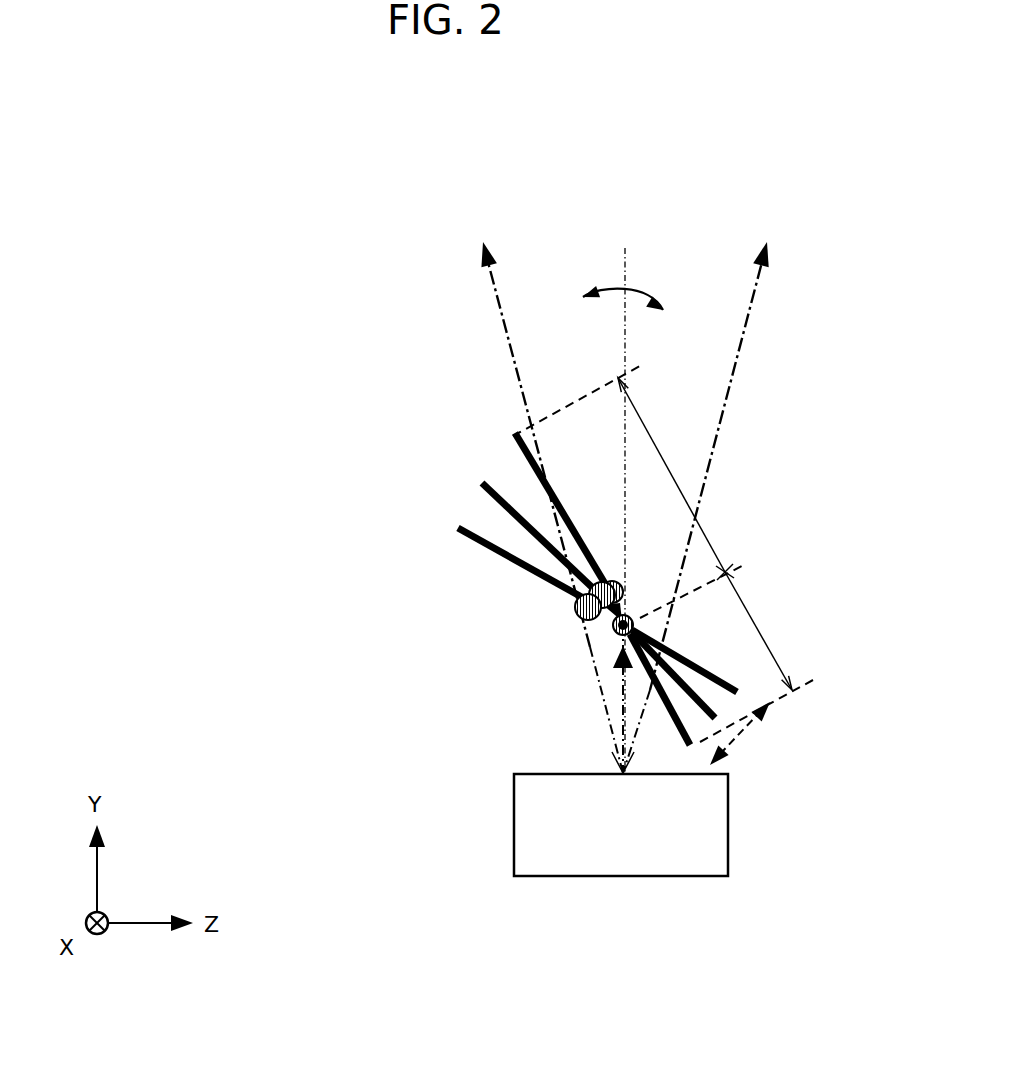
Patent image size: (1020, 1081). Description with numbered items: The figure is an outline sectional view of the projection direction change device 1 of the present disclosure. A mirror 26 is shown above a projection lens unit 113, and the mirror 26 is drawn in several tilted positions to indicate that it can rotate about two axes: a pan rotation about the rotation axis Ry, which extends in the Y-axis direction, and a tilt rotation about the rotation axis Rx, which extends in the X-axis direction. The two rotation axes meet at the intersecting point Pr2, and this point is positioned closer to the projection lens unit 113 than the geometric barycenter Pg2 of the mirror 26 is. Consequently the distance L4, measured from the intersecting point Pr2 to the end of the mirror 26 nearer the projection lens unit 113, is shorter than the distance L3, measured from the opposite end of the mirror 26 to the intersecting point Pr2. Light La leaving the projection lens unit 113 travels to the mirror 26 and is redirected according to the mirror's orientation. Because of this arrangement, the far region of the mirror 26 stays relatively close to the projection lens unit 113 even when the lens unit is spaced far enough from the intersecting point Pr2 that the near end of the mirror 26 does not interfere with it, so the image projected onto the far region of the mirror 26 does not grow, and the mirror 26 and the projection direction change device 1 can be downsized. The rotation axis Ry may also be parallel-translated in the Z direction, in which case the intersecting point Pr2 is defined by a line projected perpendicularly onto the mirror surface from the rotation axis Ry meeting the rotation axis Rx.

The projection direction change device 1 is at (634, 210).
The mirror 26 is at (527, 458).
The geometric barycenter Pg2 is at (585, 608).
The rotation axis Rx is at (612, 626).
The intersecting point Pr2 is at (614, 636).
The laser light La is at (620, 737).
The projection lens unit 113 is at (514, 819).
The rotation axis Ry is at (625, 253).
The distance L3 is at (676, 479).
The distance L4 is at (762, 631).